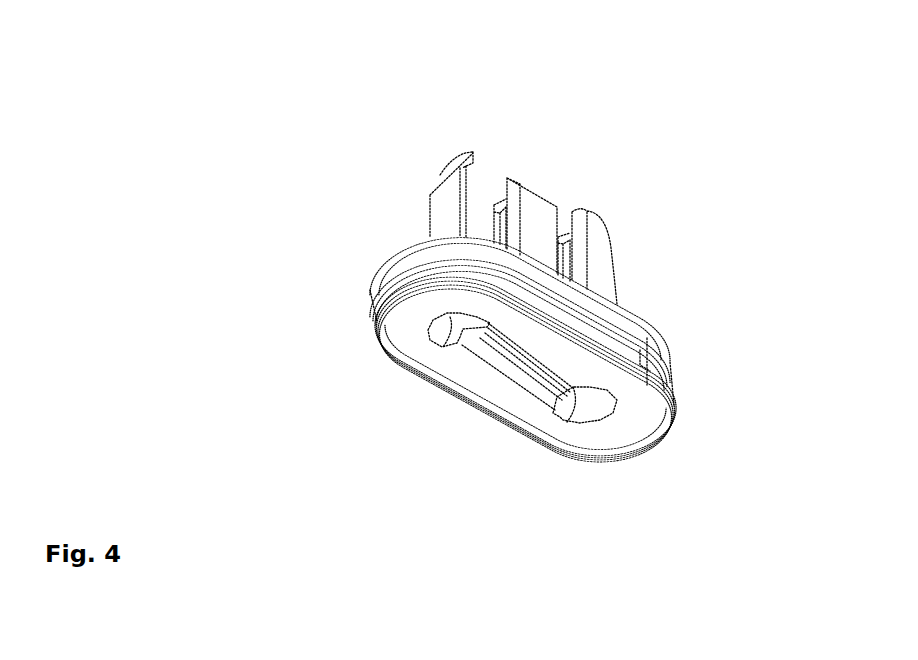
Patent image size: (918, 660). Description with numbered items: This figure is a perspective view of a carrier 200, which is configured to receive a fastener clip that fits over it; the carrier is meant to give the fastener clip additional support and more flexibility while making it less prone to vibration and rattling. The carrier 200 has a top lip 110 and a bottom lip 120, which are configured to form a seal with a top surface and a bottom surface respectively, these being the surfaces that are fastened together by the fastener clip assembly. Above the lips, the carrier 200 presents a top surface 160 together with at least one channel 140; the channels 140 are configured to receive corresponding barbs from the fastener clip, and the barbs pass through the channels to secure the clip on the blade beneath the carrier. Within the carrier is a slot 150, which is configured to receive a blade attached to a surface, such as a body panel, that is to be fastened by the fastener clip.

The carrier 200 is at (188, 120).
The top lip 110 is at (645, 323).
The bottom lip 120 is at (378, 325).
The channel 140 is at (500, 222).
The slot 150 is at (548, 393).
The top surface 160 is at (533, 188).